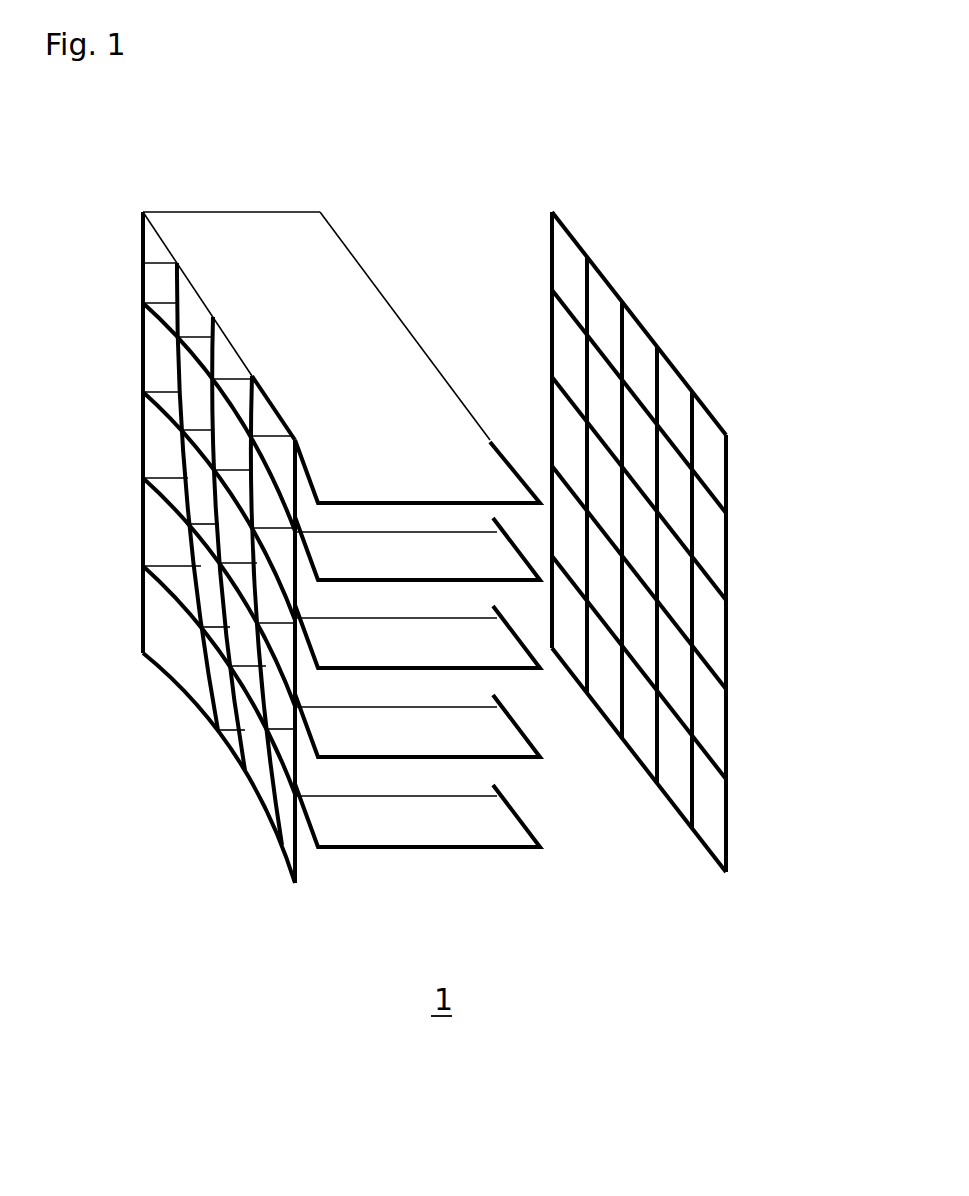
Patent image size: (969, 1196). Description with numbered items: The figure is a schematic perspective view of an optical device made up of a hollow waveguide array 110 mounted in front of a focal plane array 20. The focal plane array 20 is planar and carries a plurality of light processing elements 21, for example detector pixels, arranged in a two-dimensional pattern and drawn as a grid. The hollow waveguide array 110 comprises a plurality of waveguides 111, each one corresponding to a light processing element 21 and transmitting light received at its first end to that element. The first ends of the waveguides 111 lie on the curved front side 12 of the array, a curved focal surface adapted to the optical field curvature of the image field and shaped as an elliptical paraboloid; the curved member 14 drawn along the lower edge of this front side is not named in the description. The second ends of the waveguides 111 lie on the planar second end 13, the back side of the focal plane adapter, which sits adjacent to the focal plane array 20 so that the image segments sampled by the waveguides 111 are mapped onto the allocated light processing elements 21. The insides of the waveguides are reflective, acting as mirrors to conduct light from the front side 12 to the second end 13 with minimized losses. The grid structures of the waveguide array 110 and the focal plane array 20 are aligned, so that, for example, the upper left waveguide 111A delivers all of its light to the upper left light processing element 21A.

The hollow waveguide array 110 is at (337, 193).
The front side 12 is at (118, 515).
The second end 13 is at (407, 298).
The bottom edge member 14 is at (250, 773).
The waveguide 111 is at (167, 638).
The upper left waveguide 111A is at (175, 268).
The focal plane array 20 is at (622, 216).
The light processing element 21 is at (570, 647).
The upper left light processing element 21A is at (572, 270).